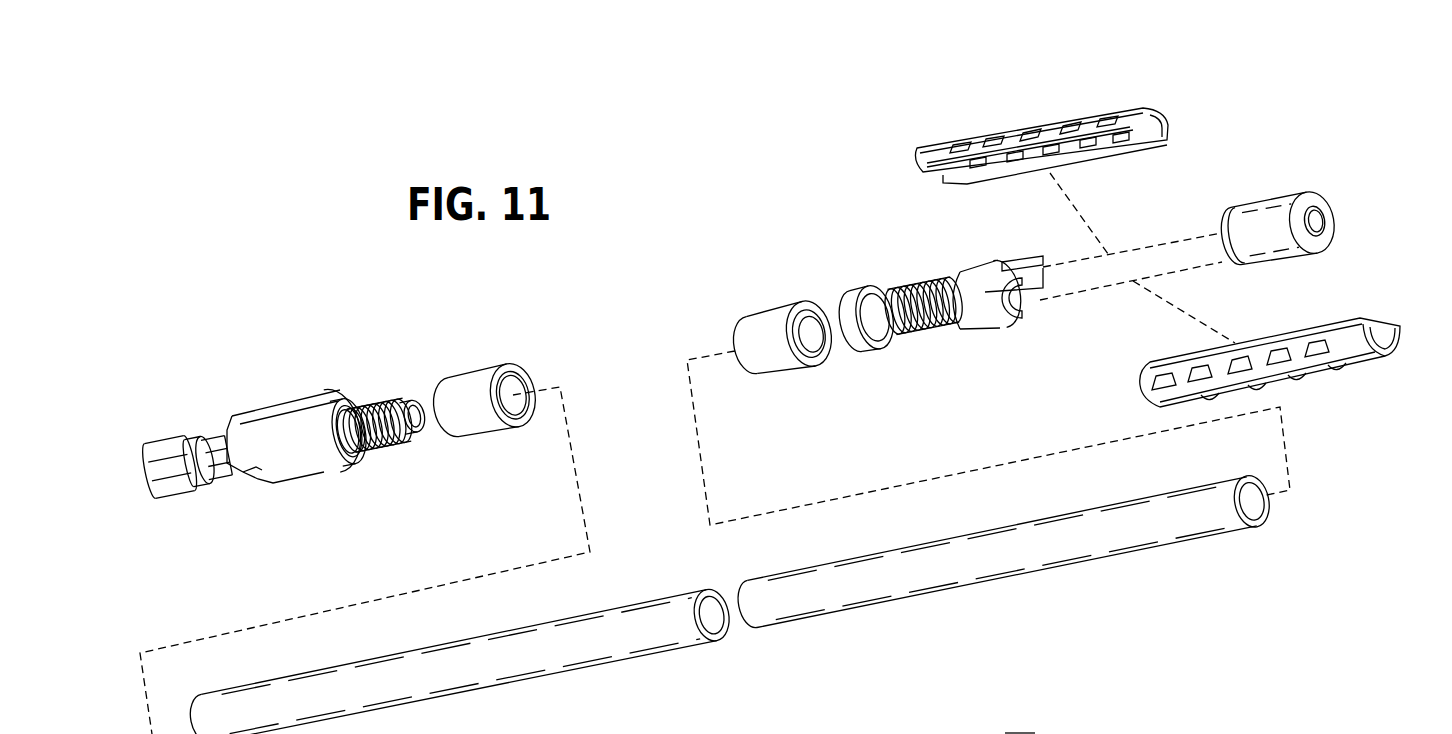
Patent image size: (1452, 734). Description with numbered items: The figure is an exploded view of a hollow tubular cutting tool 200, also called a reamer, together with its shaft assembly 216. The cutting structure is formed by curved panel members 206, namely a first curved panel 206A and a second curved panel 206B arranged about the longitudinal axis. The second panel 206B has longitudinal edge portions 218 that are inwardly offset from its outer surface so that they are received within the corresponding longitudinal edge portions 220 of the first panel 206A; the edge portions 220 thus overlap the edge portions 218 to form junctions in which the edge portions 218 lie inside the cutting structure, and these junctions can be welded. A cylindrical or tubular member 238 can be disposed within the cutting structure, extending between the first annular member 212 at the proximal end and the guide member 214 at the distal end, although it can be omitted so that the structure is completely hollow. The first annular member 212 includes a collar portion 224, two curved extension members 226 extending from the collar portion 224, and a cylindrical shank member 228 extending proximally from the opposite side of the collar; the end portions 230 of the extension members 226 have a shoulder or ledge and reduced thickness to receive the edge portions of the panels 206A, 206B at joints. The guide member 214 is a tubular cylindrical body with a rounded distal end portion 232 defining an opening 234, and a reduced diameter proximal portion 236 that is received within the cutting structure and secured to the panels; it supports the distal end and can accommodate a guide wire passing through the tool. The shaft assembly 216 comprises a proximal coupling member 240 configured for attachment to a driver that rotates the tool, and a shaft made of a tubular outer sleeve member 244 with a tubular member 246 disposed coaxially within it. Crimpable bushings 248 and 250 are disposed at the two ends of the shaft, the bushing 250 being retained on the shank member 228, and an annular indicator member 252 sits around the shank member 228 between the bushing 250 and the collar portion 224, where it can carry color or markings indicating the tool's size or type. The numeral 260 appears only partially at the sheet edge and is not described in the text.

The cutting tool 200 is at (790, 222).
The curved panel members 206 is at (1283, 342).
The first curved panel 206A is at (1032, 128).
The second curved panel 206B is at (1398, 345).
The first annular member 212 is at (977, 272).
The guide member 214 is at (1270, 203).
The shaft assembly 216 is at (643, 583).
The longitudinal edge portions 218 is at (1380, 330).
The longitudinal edge portions 220 is at (1083, 143).
The collar portion 224 is at (1007, 296).
The curved extension members 226 is at (1022, 260).
The cylindrical shank member 228 is at (922, 293).
The end portions 230 is at (1033, 320).
The rounded distal end portion 232 is at (1317, 195).
The opening 234 is at (1333, 226).
The reduced diameter proximal portion 236 is at (1229, 203).
The tubular member 238 is at (1152, 243).
The proximal coupling member 240 is at (270, 408).
The tubular outer sleeve member 244 is at (388, 660).
The tubular member 246 is at (900, 565).
The bushing 248 is at (474, 367).
The bushing 250 is at (762, 315).
The annular indicator member 252 is at (860, 298).
The connector 260 is at (1020, 727).